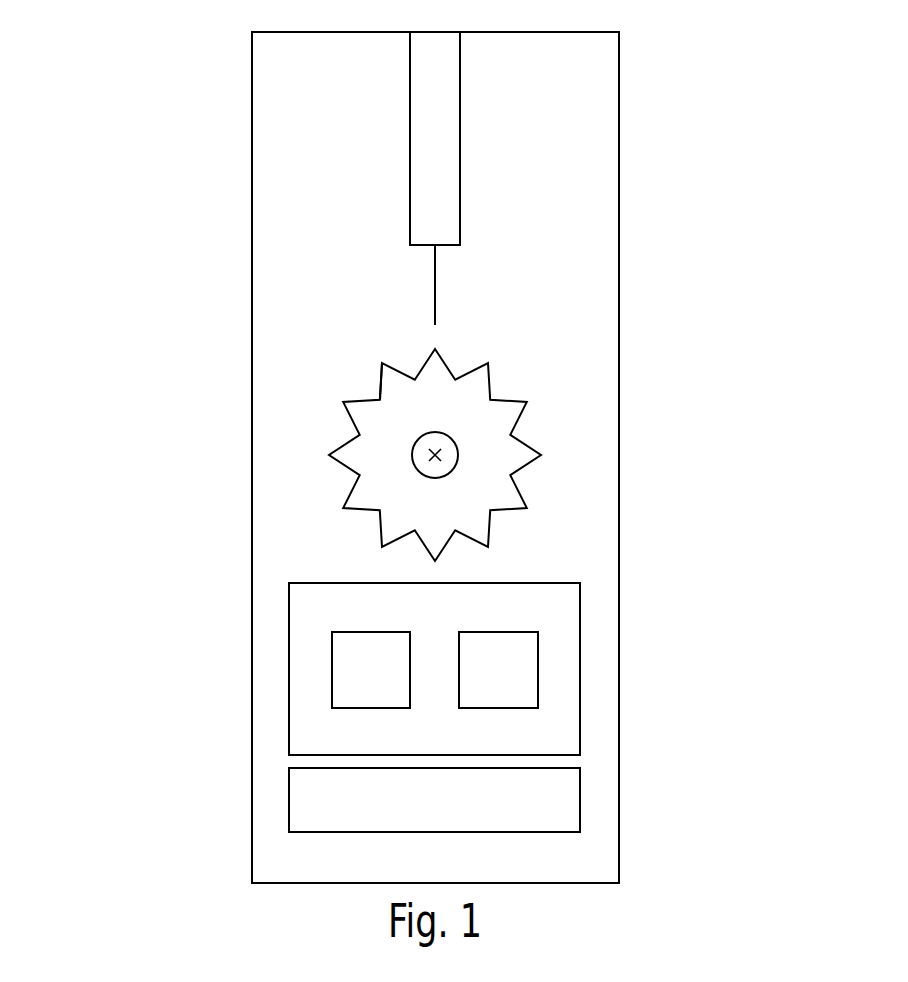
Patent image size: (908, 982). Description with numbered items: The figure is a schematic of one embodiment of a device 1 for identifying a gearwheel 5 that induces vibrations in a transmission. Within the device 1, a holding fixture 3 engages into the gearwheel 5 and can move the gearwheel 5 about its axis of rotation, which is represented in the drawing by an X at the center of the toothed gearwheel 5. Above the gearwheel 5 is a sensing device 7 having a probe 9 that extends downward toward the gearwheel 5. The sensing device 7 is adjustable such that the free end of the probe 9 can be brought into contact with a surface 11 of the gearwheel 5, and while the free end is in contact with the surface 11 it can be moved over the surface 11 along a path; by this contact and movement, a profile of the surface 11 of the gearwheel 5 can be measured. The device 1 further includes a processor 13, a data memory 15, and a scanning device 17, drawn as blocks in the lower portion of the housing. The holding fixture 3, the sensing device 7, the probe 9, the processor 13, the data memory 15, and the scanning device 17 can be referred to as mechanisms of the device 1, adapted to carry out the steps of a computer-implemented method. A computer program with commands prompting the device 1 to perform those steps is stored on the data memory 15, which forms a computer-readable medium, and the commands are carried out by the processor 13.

The device 1 is at (822, 152).
The holding fixture 3 is at (458, 457).
The gearwheel 5 is at (498, 495).
The sensing device 7 is at (442, 195).
The probe 9 is at (435, 290).
The surface 11 is at (380, 382).
The processor 13 is at (340, 678).
The data memory 15 is at (528, 678).
The scanning device 17 is at (553, 802).